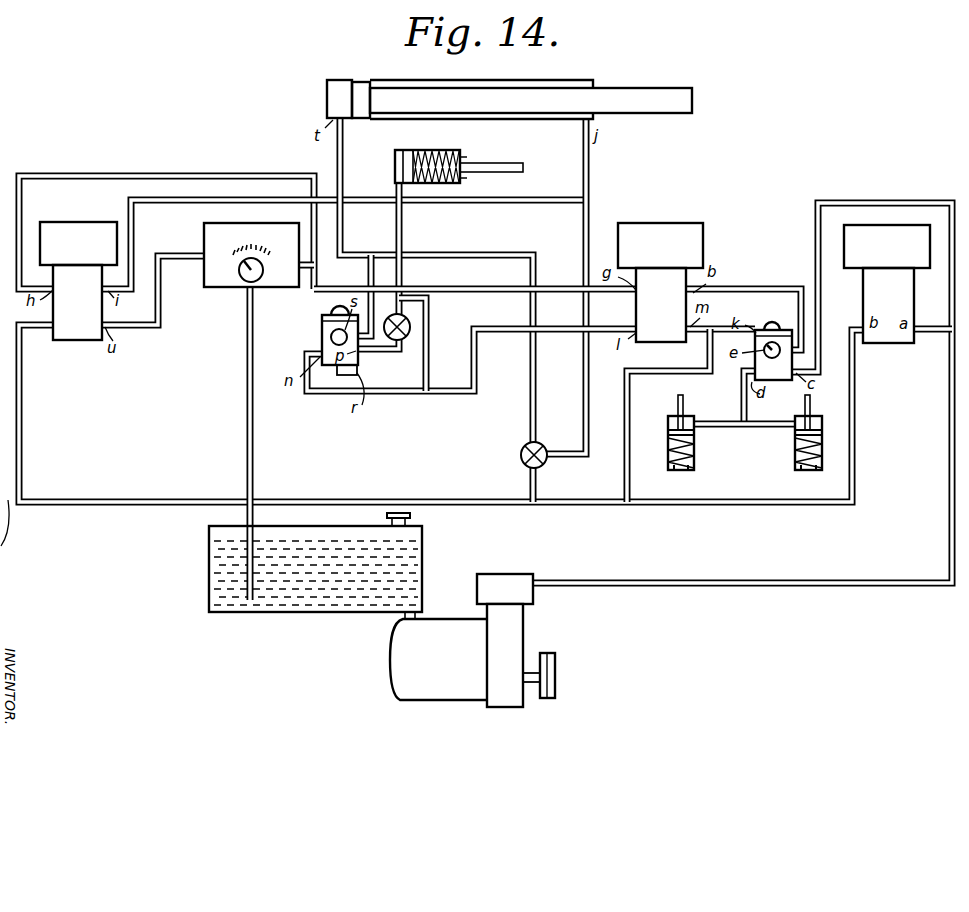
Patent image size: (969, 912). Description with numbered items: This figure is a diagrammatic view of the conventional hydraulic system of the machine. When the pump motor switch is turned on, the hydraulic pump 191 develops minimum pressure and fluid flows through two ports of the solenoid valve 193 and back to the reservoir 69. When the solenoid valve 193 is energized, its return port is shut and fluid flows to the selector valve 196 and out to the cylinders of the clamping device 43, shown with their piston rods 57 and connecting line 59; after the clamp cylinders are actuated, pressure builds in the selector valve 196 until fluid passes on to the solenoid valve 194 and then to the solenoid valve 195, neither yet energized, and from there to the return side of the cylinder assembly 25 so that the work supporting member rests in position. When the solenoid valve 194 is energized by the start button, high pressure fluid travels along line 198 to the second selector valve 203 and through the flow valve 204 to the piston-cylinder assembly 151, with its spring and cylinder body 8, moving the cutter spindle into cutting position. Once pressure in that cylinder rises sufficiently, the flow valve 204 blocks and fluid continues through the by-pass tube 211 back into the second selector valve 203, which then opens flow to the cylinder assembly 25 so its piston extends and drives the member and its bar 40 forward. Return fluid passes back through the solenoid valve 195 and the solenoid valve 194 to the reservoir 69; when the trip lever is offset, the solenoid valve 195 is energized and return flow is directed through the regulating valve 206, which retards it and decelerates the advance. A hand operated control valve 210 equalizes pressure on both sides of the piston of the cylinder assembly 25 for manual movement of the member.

The cylinder assembly 25 is at (337, 77).
The bar 40 is at (646, 96).
The piston-cylinder assembly 151 is at (437, 149).
The cylinder 8 is at (395, 186).
The solenoid valve 195 is at (95, 250).
The regulating valve 206 is at (205, 240).
The second selector valve 203 is at (339, 303).
The flow valve 204 is at (412, 326).
The by-pass tube 211 is at (429, 343).
The hand operated control valve 210 is at (521, 456).
The conduit 198 is at (553, 287).
The solenoid valve 194 is at (678, 251).
The solenoid valve 193 is at (905, 252).
The selector valve 196 is at (771, 321).
The piston rod 57 is at (695, 418).
The conduit 59 is at (758, 427).
The clamping device 43 is at (699, 459).
The reservoir 69 is at (218, 613).
The hydraulic pump 191 is at (463, 692).